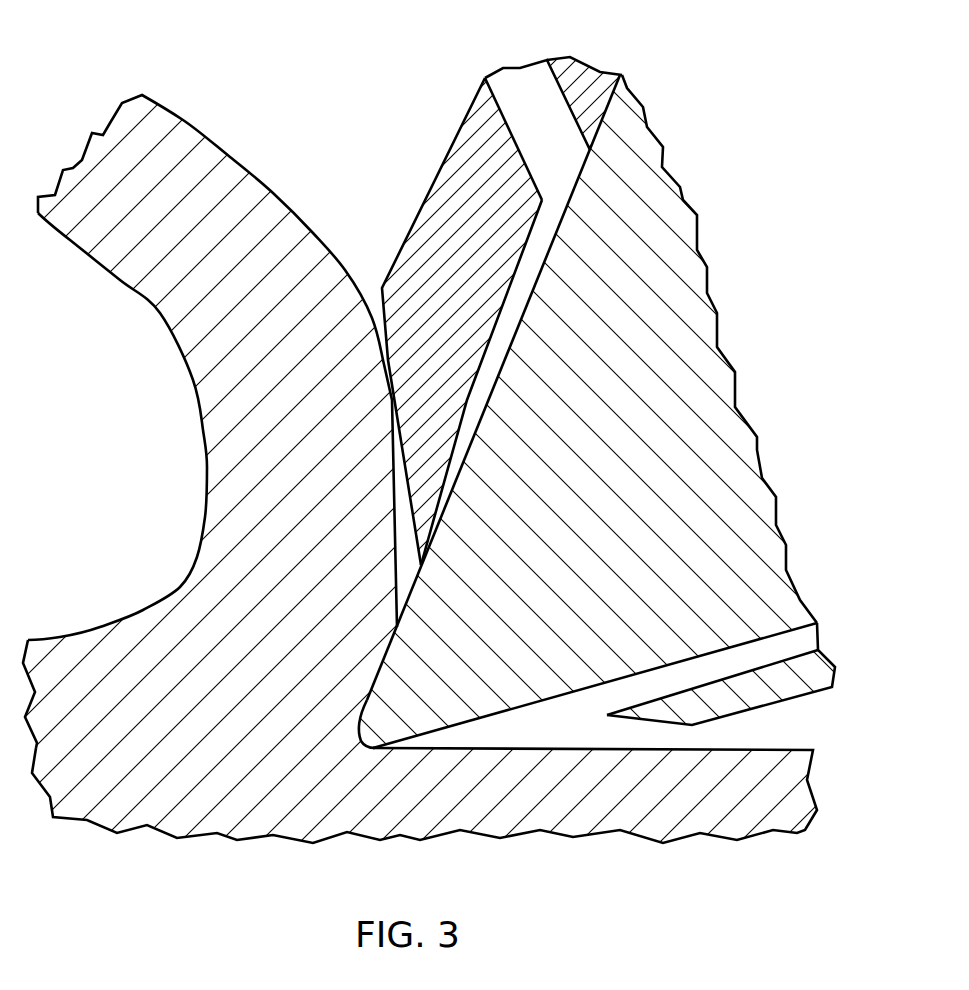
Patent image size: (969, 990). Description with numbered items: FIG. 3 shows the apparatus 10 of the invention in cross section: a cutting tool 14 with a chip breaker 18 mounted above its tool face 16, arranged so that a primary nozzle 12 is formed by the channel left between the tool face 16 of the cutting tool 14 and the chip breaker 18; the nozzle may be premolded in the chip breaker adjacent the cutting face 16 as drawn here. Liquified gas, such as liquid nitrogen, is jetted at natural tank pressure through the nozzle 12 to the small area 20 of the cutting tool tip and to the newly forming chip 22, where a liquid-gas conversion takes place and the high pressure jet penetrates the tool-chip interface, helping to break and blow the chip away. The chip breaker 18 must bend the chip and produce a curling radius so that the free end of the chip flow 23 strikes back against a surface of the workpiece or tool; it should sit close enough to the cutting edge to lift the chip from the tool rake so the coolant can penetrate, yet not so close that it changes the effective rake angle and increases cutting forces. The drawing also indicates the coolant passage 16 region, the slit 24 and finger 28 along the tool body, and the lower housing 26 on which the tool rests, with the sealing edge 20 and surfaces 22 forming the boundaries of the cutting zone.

The seal assembly 10 is at (752, 320).
The primary nozzle 12 is at (513, 83).
The cutting tool 14 is at (687, 200).
The tool face 16 is at (570, 197).
The chip breaker 18 is at (443, 157).
The small area of the cutting tool tip 20 is at (367, 740).
The newly forming chip 22 is at (168, 317).
The chip flow 23 is at (103, 143).
The groove 24 is at (808, 642).
The housing 26 is at (608, 827).
The retention tab 28 is at (552, 698).